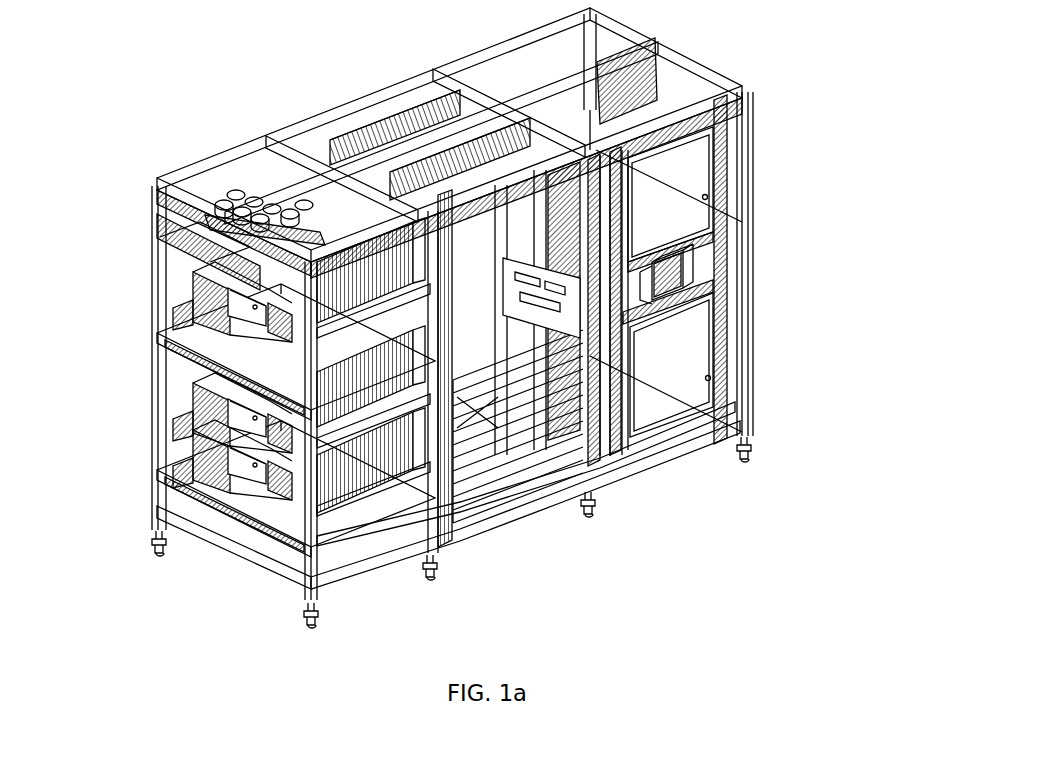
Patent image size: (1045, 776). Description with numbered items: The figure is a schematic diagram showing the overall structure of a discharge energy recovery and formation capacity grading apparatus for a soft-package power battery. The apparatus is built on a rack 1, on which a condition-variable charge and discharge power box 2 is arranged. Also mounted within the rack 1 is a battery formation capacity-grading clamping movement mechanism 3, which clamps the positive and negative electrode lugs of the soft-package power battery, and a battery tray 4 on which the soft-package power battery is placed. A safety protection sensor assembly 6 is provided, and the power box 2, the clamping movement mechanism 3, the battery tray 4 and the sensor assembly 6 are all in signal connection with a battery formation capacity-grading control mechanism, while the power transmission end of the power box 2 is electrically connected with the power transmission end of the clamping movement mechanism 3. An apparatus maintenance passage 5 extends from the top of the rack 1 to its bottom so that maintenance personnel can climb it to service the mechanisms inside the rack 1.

The rack 1 is at (390, 562).
The condition-variable charge and discharge power box 2 is at (944, 314).
The battery formation capacity-grading clamping movement mechanism 3 is at (183, 452).
The battery tray 4 is at (167, 363).
The apparatus maintenance passage 5 is at (594, 501).
The safety protection sensor assembly 6 is at (728, 253).